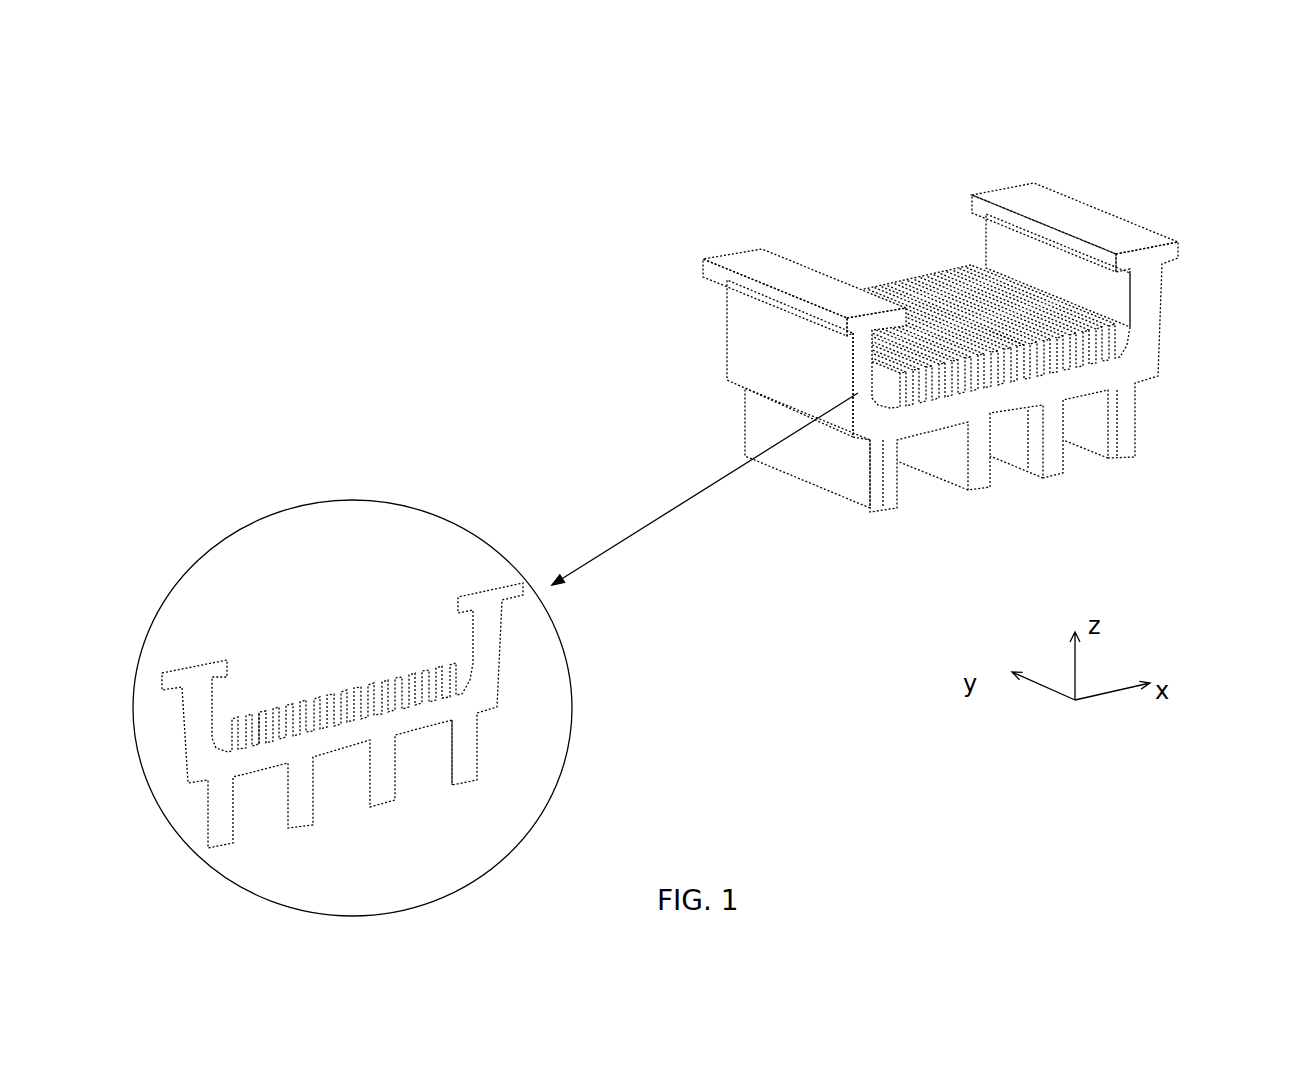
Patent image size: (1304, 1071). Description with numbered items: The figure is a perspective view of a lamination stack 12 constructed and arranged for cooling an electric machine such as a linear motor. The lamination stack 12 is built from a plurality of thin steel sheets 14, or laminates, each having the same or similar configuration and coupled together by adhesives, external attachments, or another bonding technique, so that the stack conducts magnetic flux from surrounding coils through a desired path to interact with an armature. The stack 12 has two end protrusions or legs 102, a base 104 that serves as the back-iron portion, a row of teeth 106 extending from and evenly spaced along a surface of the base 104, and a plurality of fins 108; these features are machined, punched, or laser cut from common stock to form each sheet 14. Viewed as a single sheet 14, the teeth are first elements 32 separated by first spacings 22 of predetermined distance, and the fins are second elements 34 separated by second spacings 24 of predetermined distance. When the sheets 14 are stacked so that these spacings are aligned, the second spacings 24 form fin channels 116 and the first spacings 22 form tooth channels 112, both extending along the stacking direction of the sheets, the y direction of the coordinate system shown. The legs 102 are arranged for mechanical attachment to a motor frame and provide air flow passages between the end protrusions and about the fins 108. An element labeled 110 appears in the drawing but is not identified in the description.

The lamination stack 12 is at (973, 334).
The sheet 14 is at (338, 556).
The first spacing 22 is at (425, 775).
The second spacing 24 is at (335, 698).
The first element 32 is at (460, 748).
The second element 34 is at (268, 713).
The leg 102 is at (762, 365).
The base 104 is at (948, 412).
The teeth 106 is at (1132, 410).
The fins 108 is at (942, 307).
The top flange 110 is at (1080, 194).
The tooth channel 112 is at (994, 456).
The fin channel 116 is at (1030, 343).